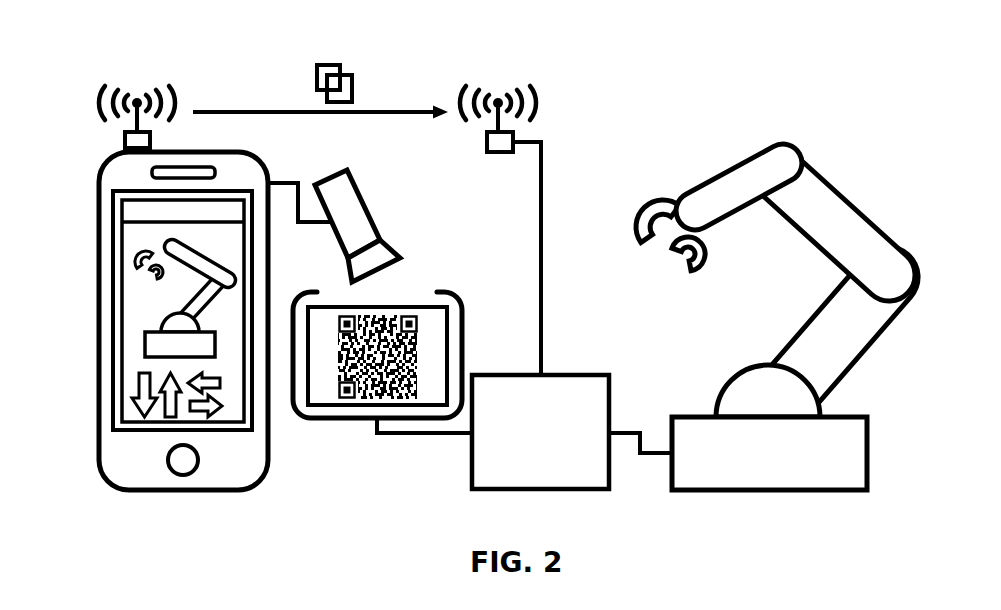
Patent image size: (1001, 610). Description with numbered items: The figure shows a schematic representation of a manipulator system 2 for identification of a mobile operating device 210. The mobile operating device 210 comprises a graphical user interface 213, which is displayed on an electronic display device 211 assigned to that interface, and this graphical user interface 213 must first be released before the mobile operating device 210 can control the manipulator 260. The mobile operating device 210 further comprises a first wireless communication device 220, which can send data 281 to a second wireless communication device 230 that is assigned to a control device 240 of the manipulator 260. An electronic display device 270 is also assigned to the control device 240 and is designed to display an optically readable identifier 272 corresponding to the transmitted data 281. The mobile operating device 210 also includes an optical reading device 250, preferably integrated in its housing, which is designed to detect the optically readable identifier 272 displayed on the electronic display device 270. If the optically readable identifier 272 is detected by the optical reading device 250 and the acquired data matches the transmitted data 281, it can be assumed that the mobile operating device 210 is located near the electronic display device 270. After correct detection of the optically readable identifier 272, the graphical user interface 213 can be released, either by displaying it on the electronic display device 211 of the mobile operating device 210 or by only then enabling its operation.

The manipulator system 2 is at (75, 38).
The mobile operating device 210 is at (76, 208).
The electronic display device 211 is at (113, 393).
The graphical user interface 213 is at (132, 297).
The first wireless communication device 220 is at (126, 142).
The second wireless communication device 230 is at (515, 140).
The control device 240 is at (568, 375).
The optical reading device 250 is at (379, 236).
The manipulator 260 is at (873, 150).
The electronic display device 270 is at (407, 328).
The optically readable identifier 272 is at (413, 316).
The data 281 is at (294, 77).